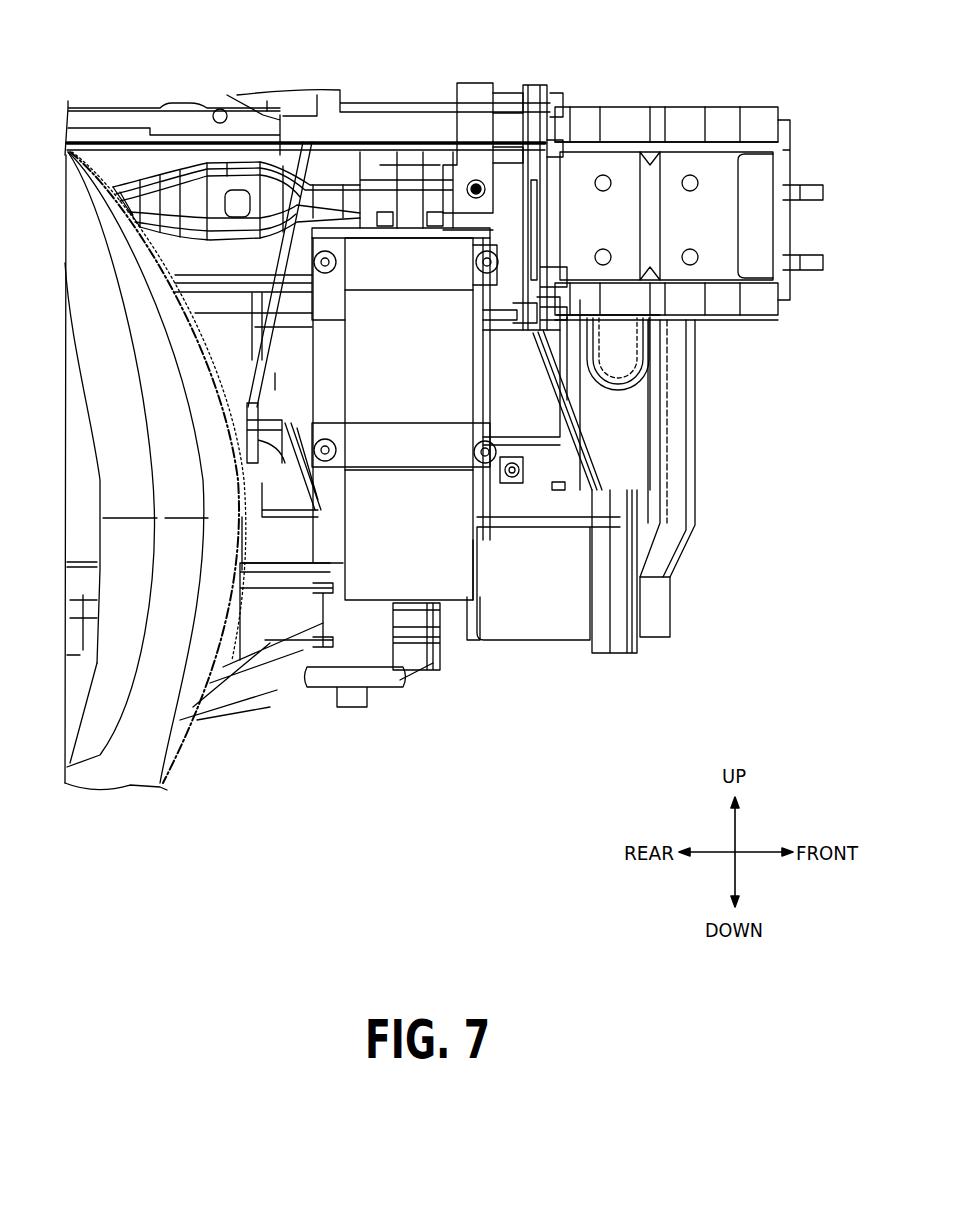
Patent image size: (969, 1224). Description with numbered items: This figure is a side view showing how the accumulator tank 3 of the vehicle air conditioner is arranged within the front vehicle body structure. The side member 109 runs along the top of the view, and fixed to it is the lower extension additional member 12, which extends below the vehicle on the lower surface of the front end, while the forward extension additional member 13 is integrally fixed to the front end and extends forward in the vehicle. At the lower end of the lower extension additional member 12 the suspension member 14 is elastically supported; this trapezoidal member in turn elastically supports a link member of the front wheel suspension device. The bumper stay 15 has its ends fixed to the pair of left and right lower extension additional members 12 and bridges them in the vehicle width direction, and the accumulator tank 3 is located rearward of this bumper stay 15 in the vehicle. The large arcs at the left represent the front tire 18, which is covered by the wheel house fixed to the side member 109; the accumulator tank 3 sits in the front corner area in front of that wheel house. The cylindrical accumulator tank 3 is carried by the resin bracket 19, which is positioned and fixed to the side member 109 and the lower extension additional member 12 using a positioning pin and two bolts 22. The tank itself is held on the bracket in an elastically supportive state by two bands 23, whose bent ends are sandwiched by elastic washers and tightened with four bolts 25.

The accumulator tank 3 is at (443, 580).
The lower extension additional member 12 is at (517, 415).
The forward extension additional member 13 is at (598, 160).
The suspension member 14 is at (242, 673).
The bumper stay 15 is at (540, 594).
The front tire 18 is at (133, 723).
The resin bracket 19 is at (297, 358).
The bolt 22 is at (476, 180).
The band 23 is at (410, 248).
The bolt 25 is at (325, 266).
The side member 109 is at (373, 160).